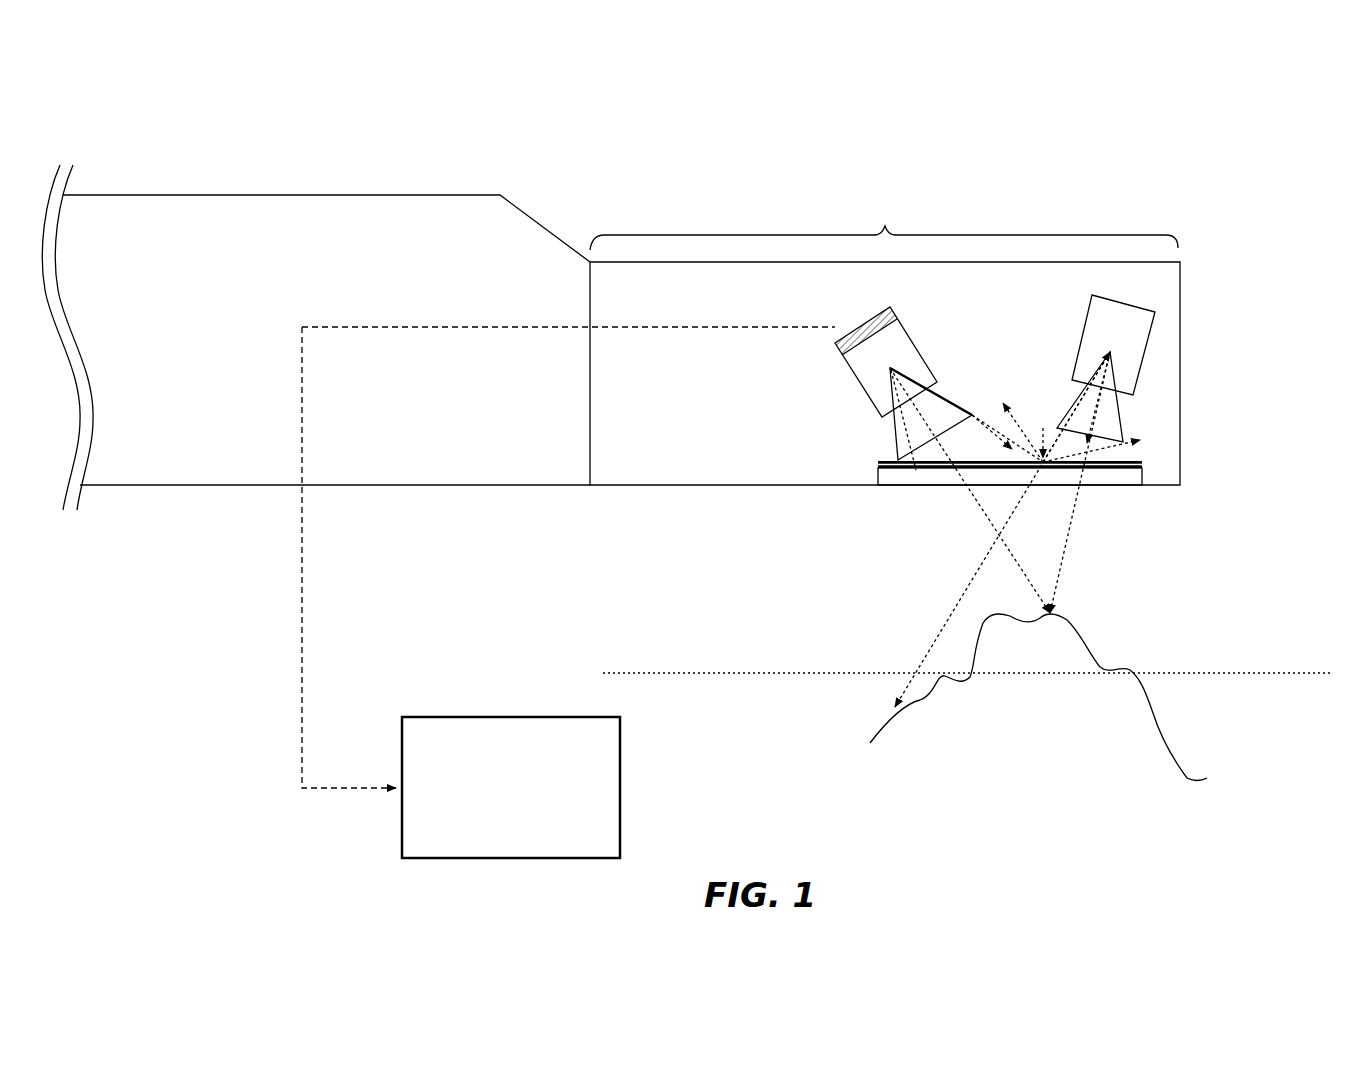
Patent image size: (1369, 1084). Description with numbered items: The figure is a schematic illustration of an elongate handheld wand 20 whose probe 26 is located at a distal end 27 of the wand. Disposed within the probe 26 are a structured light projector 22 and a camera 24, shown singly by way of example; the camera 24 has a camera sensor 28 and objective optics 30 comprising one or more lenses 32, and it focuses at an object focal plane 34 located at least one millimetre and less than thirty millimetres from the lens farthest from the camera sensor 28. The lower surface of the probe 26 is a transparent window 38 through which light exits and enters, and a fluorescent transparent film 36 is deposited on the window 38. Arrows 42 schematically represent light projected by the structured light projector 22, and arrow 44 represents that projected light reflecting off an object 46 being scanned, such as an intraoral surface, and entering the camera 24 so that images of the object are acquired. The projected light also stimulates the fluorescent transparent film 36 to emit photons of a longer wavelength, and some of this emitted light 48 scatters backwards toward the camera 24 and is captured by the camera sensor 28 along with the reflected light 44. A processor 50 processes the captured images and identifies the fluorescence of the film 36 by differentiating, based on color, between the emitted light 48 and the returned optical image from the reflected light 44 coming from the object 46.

The elongate handheld wand 20 is at (350, 132).
The structured light projector 22 is at (1150, 340).
The camera 24 is at (857, 377).
The probe 26 is at (884, 224).
The distal end 27 is at (1158, 197).
The camera sensor 28 is at (842, 348).
The objective optics 30 is at (893, 432).
The lens 32 is at (905, 486).
The object focal plane 34 is at (1313, 672).
The fluorescent transparent film 36 is at (1140, 455).
The window 38 is at (1098, 486).
The projected light 42 is at (968, 586).
The reflected light 44 is at (975, 505).
The object 46 is at (1088, 645).
The emitted light 48 is at (983, 425).
The processor 50 is at (498, 814).